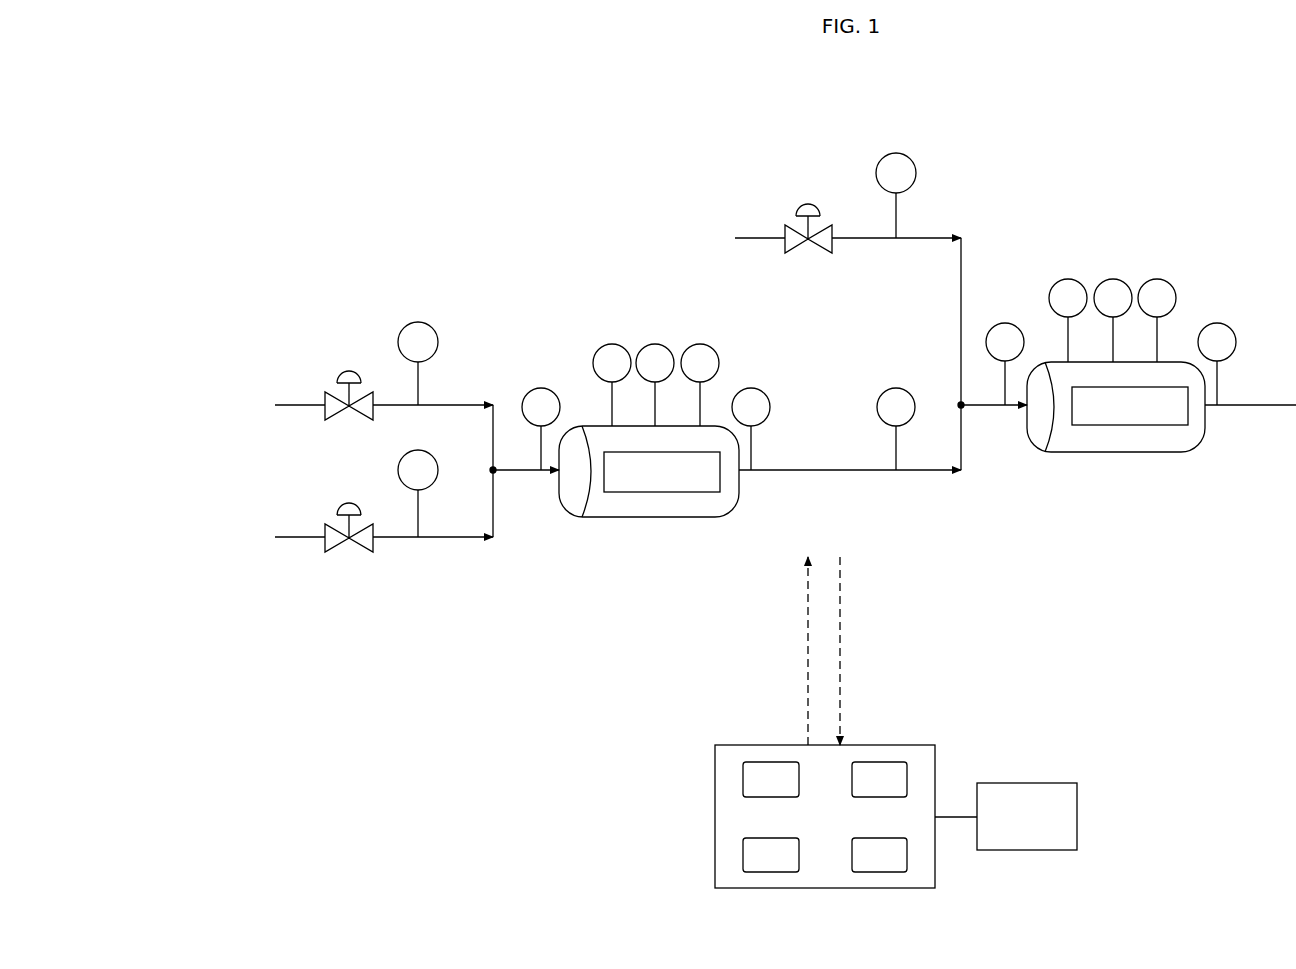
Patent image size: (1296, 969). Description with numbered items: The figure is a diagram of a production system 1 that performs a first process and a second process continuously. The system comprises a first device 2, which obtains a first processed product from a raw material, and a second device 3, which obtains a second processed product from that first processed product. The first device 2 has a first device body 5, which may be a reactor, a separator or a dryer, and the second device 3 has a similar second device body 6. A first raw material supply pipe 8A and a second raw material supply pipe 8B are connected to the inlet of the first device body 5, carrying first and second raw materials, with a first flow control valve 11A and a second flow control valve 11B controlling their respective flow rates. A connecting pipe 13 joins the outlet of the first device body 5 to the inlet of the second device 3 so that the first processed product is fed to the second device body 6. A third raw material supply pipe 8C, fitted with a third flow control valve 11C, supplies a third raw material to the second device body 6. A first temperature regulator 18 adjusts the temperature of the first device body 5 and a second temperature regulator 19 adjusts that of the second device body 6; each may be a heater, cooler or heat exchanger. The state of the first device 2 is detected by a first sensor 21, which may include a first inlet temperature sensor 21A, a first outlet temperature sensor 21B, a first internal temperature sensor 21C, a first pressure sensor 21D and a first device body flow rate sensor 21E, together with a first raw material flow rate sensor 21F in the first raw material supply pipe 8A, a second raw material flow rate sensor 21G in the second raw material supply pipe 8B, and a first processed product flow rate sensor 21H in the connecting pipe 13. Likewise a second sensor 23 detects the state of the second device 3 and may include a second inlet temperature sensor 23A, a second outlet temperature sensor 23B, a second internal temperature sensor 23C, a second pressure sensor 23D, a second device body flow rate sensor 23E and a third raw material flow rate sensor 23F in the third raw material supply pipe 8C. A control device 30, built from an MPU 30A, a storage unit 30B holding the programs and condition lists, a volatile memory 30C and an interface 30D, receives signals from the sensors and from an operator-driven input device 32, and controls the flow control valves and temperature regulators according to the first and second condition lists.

The production system 1 is at (370, 178).
The first device 2 is at (543, 585).
The second device 3 is at (1080, 518).
The first device body 5 is at (630, 517).
The second device body 6 is at (1097, 452).
The first raw material supply pipe 8A is at (297, 403).
The second raw material supply pipe 8B is at (297, 535).
The third raw material supply pipe 8C is at (757, 237).
The first flow control valve 11A is at (349, 370).
The second flow control valve 11B is at (349, 501).
The third flow control valve 11C is at (808, 203).
The connecting pipe 13 is at (866, 472).
The first temperature regulator 18 is at (692, 480).
The second temperature regulator 19 is at (1158, 417).
The first sensor 21 is at (582, 300).
The first inlet temperature sensor 21A is at (541, 388).
The first outlet temperature sensor 21B is at (751, 388).
The first internal temperature sensor 21C is at (700, 344).
The first pressure sensor 21D is at (612, 344).
The first device body flow rate sensor 21E is at (655, 344).
The first raw material flow rate sensor 21F is at (418, 322).
The second raw material flow rate sensor 21G is at (418, 450).
The first processed product flow rate sensor 21H is at (896, 388).
The second sensor 23 is at (1215, 228).
The second inlet temperature sensor 23A is at (1005, 323).
The second outlet temperature sensor 23B is at (1217, 323).
The second internal temperature sensor 23C is at (1157, 279).
The second pressure sensor 23D is at (1068, 279).
The second device body flow rate sensor 23E is at (1113, 279).
The third raw material flow rate sensor 23F is at (896, 153).
The control device 30 is at (700, 765).
The MPU (microprocessor) 30A is at (758, 762).
The storage unit 30B is at (884, 762).
The volatile memory 30C is at (777, 873).
The interface 30D is at (884, 873).
The input device 32 is at (1046, 783).